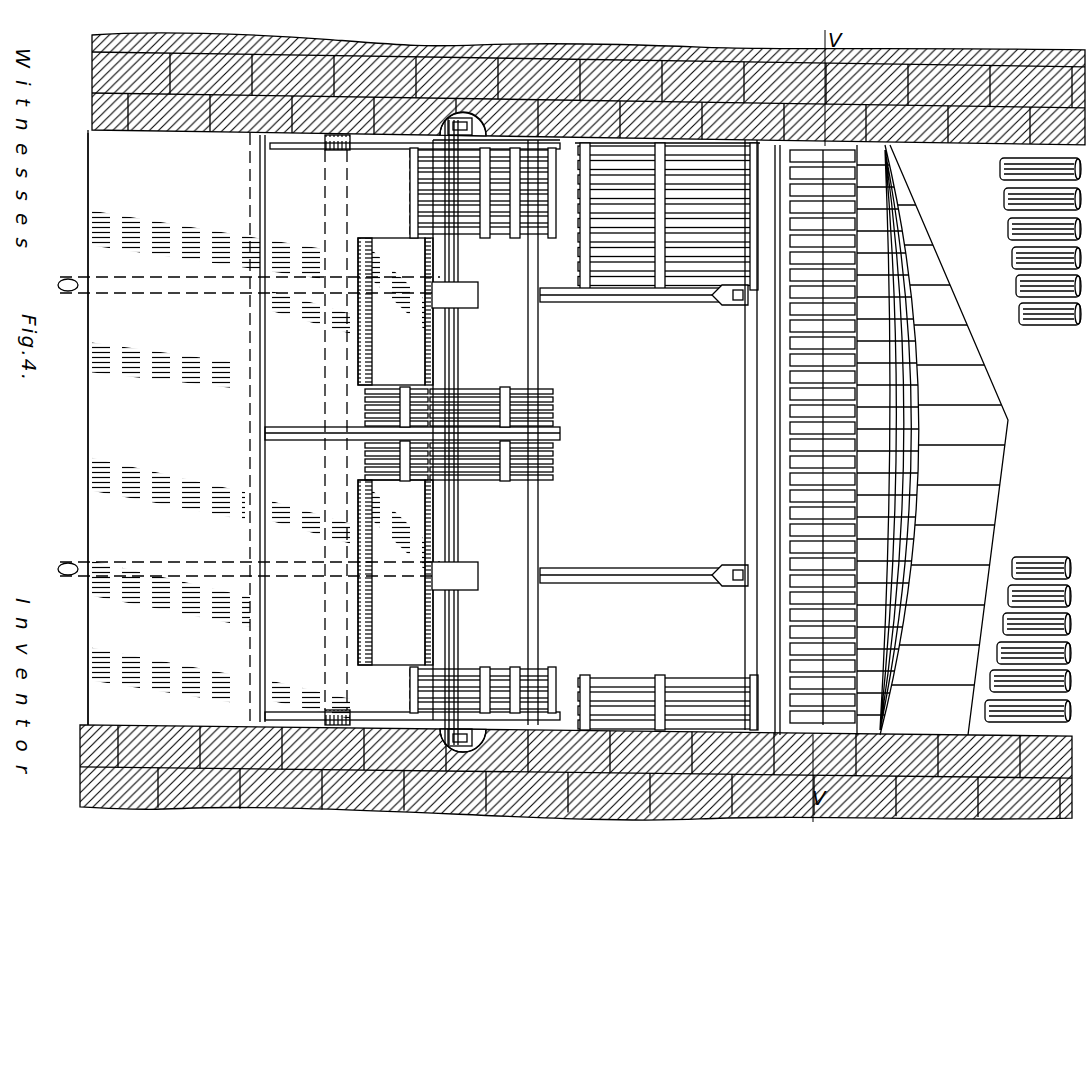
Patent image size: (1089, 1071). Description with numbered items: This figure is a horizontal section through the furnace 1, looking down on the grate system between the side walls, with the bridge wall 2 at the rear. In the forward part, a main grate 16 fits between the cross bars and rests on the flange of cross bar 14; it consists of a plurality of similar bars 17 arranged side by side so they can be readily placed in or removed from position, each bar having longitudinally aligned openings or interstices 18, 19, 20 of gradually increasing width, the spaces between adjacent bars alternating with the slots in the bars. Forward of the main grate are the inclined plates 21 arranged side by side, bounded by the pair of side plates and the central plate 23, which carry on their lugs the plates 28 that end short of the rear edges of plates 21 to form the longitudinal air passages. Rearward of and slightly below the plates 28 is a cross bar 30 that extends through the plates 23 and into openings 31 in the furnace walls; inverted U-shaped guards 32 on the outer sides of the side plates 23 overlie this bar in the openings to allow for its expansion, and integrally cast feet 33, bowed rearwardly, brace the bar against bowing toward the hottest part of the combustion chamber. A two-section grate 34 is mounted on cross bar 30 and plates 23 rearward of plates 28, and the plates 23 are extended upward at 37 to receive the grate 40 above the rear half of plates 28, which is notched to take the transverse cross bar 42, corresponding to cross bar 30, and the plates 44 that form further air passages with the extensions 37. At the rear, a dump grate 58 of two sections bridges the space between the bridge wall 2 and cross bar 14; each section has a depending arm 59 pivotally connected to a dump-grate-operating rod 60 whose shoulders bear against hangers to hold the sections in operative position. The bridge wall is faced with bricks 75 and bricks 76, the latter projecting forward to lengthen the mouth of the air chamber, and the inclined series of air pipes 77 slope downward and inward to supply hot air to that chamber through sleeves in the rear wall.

The furnace 1 is at (88, 417).
The bridge wall 2 is at (1000, 440).
The cross bar 14 is at (757, 460).
The main grate 16 is at (249, 427).
The grate bars 17 is at (655, 292).
The openings or interstices 18 is at (632, 288).
The openings or interstices 19 is at (700, 290).
The openings or interstices 20 is at (724, 290).
The inclined plates 21 is at (596, 432).
The side plates and central plate 23 is at (362, 712).
The plates 28 is at (395, 451).
The cross bar 30 is at (498, 535).
The openings 31 is at (474, 746).
The inverted U-shaped guards 32 is at (455, 752).
The feet 33 is at (478, 590).
The grate 34 is at (553, 478).
The upward extensions 37 is at (289, 712).
The grate 40 is at (416, 388).
The transverse cross bar 42 is at (335, 152).
The plates 44 is at (307, 428).
The dump grate 58 is at (790, 634).
The depending arm 59 is at (736, 566).
The dump-grate-operating rod 60 is at (600, 568).
The bricks 75 is at (990, 443).
The bricks 76 is at (888, 440).
The air pipes 77 is at (1040, 566).